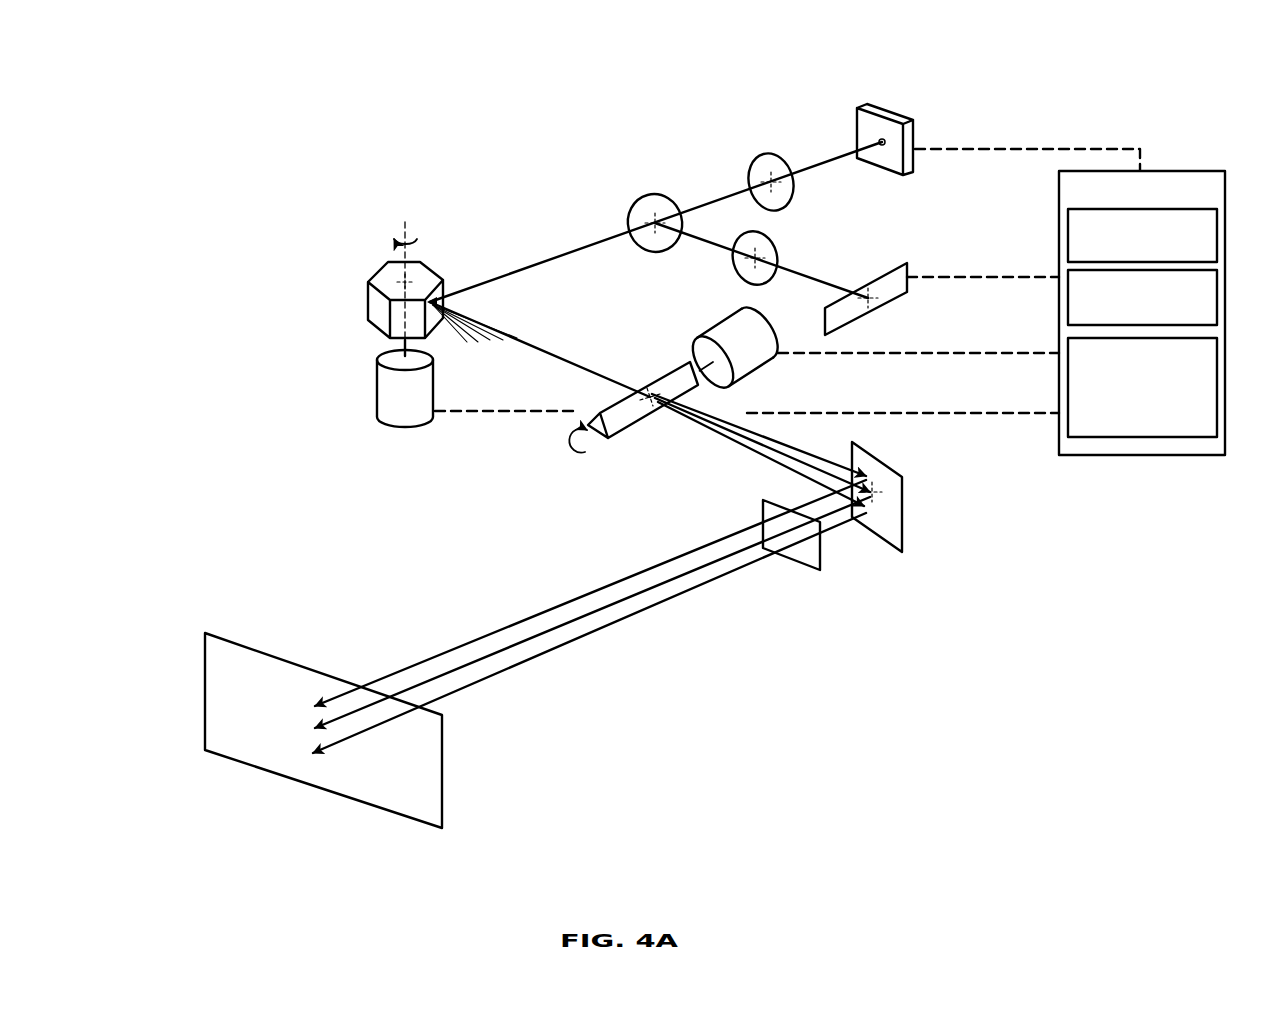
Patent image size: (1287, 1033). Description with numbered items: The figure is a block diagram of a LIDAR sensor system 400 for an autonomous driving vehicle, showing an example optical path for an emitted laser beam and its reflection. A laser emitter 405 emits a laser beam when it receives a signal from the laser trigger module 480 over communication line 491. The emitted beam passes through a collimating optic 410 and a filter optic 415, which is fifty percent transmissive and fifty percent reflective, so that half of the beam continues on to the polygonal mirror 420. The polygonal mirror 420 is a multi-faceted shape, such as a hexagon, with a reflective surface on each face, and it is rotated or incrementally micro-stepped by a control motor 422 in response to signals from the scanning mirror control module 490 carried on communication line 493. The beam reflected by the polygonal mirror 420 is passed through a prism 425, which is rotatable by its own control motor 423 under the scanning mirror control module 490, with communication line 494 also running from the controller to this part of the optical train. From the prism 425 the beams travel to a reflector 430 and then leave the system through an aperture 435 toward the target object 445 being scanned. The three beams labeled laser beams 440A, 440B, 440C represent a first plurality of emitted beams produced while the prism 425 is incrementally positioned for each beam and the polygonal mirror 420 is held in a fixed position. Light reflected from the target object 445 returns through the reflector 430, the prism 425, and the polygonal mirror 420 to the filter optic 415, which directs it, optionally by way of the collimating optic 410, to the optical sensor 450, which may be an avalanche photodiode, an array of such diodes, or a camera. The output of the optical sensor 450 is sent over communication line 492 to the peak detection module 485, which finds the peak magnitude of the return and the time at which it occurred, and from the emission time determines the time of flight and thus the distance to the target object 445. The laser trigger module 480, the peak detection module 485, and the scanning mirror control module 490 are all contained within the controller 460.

The LIDAR sensor system 400 is at (667, 431).
The laser emitter 405 is at (863, 106).
The collimating optic 410 is at (760, 156).
The filter optic 415 is at (632, 202).
The polygonal mirror 420 is at (385, 272).
The control motor 422 is at (380, 357).
The control motor 423 is at (716, 322).
The prism 425 is at (612, 402).
The reflector 430 is at (888, 470).
The aperture 435 is at (762, 500).
The laser beam 440A is at (597, 590).
The laser beam 440B is at (535, 638).
The laser beam 440C is at (582, 637).
The target object 445 is at (205, 633).
The optical sensor 450 is at (890, 268).
The controller 460 is at (1157, 201).
The laser trigger module 480 is at (1157, 256).
The peak detection module 485 is at (1157, 320).
The scanning mirror control module 490 is at (1187, 408).
The communication line 491 is at (1072, 148).
The communication line 492 is at (1030, 275).
The communication line 493 is at (1010, 411).
The communication line 494 is at (1010, 351).